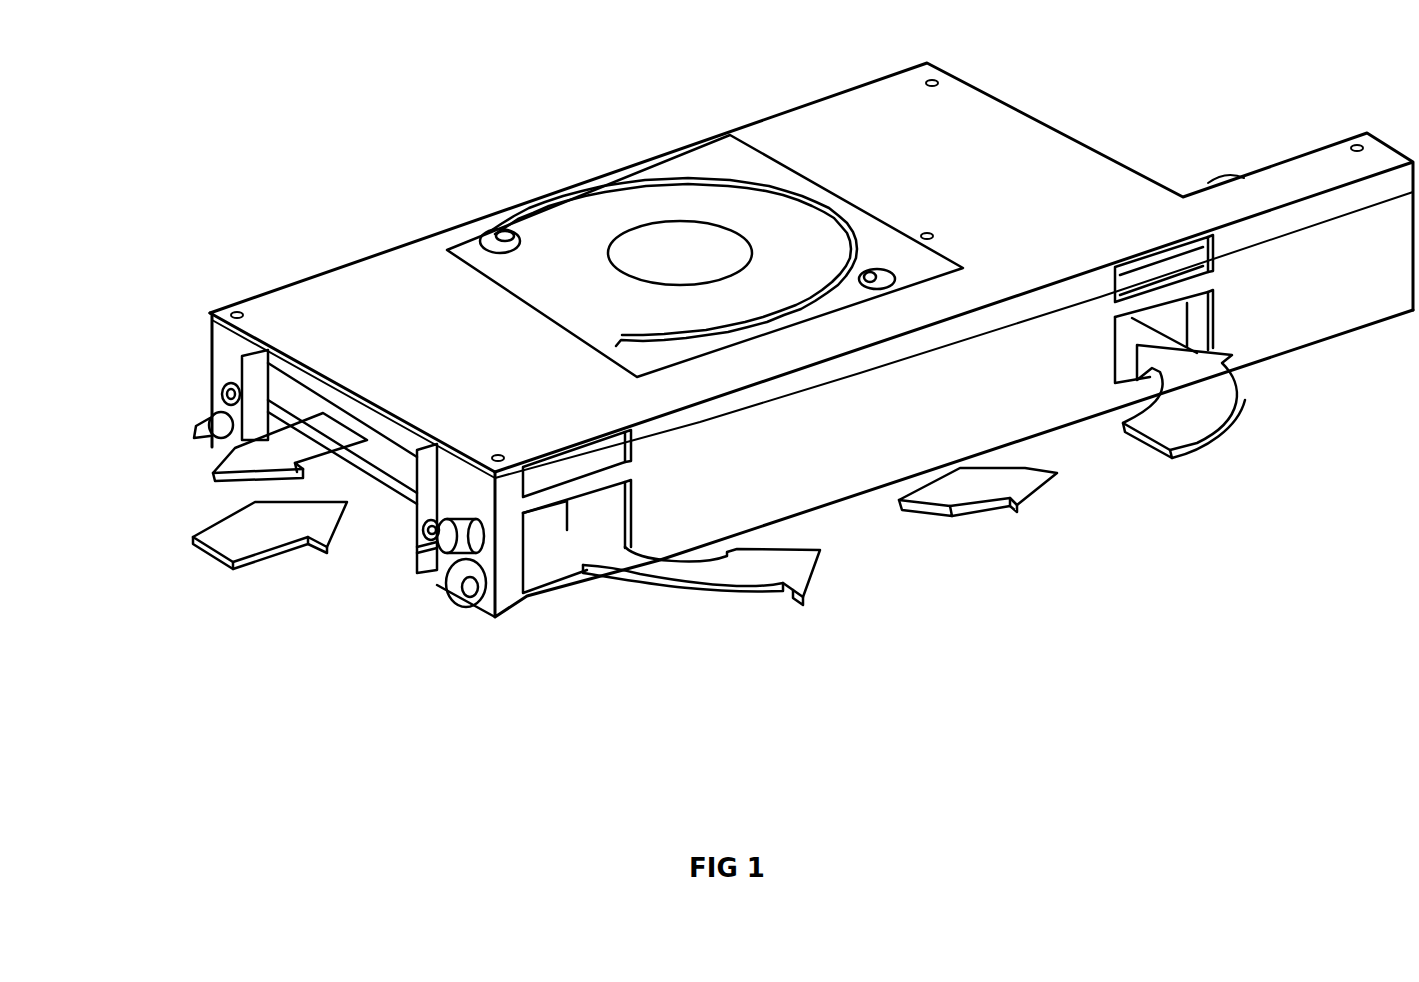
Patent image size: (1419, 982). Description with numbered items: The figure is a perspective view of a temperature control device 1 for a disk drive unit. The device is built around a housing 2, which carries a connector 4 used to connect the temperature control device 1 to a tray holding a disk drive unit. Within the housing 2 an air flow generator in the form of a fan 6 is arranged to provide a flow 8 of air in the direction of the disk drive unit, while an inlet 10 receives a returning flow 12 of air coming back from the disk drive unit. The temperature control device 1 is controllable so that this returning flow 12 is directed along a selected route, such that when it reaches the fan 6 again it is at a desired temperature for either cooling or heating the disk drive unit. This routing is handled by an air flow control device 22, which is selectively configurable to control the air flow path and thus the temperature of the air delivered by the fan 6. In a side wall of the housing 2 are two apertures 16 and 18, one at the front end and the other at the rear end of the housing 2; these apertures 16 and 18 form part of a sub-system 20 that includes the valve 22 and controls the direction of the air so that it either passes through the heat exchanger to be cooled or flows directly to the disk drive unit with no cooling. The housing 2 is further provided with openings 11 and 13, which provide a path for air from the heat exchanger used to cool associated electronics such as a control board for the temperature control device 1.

The temperature control device 1 is at (745, 387).
The housing 2 is at (268, 280).
The connector 4 is at (424, 592).
The fan 6 is at (592, 231).
The flow of air 8 is at (252, 457).
The inlet 10 is at (374, 505).
The opening 11 is at (608, 452).
The flow of air 12 is at (257, 526).
The opening 13 is at (1183, 265).
The aperture 16 is at (556, 554).
The aperture 18 is at (1158, 320).
The sub-system 20 is at (690, 393).
The air flow control device 22 is at (618, 512).